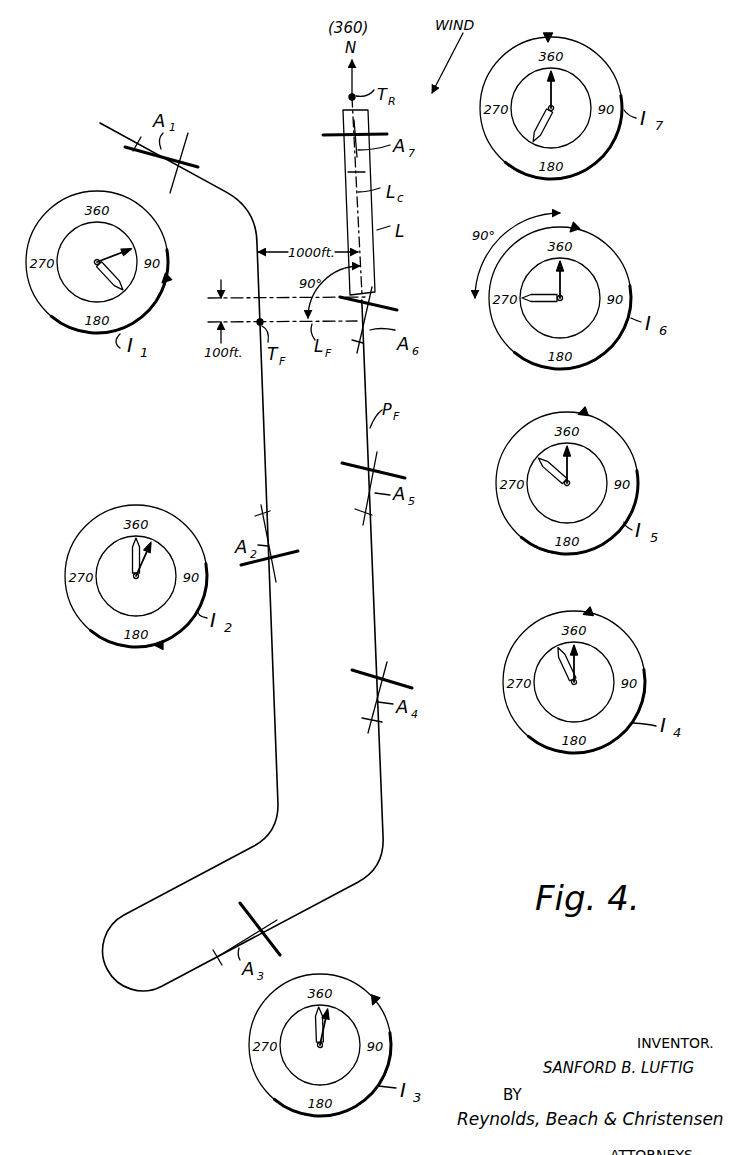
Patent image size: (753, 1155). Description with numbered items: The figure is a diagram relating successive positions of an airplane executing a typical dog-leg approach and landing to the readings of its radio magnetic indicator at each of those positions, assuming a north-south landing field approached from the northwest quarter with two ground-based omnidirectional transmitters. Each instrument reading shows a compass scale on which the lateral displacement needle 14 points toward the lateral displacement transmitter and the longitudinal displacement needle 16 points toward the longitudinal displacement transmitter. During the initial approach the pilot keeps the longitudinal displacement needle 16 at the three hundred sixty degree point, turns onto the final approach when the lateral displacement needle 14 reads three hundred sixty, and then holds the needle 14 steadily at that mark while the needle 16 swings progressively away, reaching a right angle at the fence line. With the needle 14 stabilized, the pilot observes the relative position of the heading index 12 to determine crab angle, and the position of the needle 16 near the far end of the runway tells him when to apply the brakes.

The heading index 12 is at (169, 275).
The lateral displacement needle 14 is at (118, 251).
The longitudinal displacement needle 16 is at (108, 276).